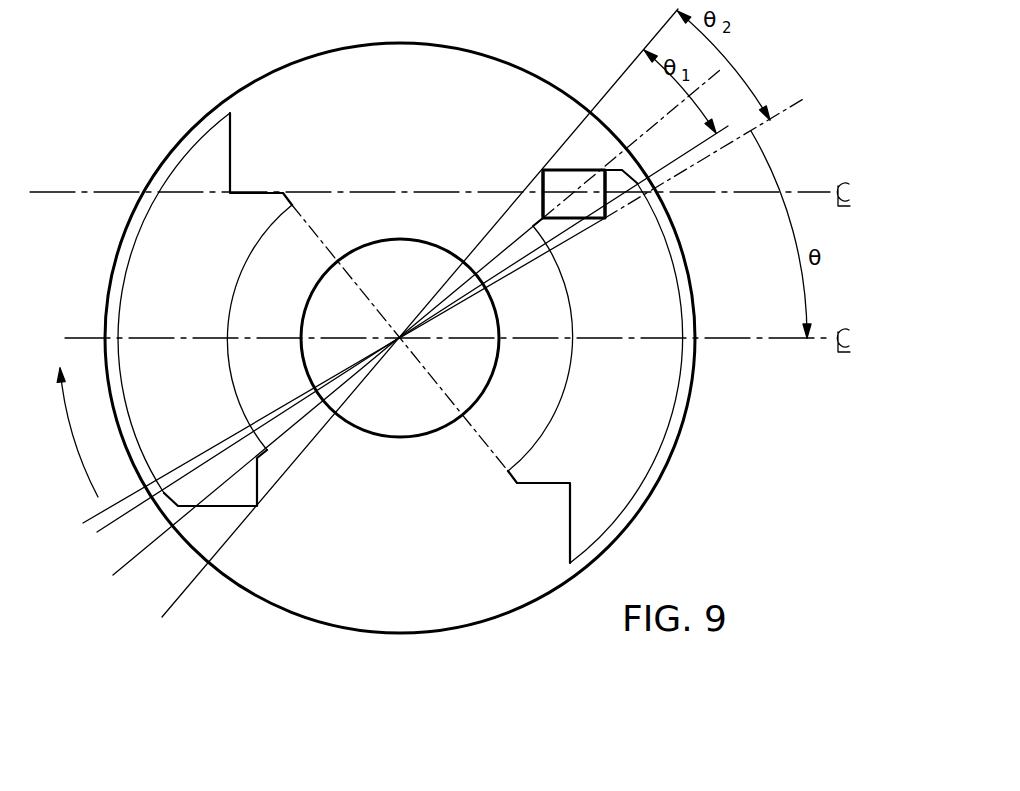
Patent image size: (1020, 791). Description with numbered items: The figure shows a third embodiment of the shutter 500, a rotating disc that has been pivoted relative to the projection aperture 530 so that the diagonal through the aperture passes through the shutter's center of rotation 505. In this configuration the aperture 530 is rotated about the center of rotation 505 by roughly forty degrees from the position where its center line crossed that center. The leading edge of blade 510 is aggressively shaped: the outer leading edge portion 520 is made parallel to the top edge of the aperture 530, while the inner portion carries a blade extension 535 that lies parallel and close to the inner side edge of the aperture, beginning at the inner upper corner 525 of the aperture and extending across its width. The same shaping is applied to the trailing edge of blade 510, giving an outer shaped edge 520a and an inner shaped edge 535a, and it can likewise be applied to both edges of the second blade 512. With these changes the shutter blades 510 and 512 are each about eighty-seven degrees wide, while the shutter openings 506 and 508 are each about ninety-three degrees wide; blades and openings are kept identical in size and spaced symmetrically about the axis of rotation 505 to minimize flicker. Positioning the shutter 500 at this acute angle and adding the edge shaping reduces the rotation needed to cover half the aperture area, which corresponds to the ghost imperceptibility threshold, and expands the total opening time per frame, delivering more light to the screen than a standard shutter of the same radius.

The shutter 500 is at (262, 648).
The center of rotation 505 is at (403, 328).
The shutter opening 506 is at (142, 295).
The shutter opening 508 is at (645, 430).
The blade 510 is at (514, 80).
The blade 512 is at (502, 588).
The outer leading edge portion 520 is at (611, 167).
The outer shaped edge 520a is at (230, 158).
The inner upper corner of aperture 525 is at (543, 169).
The aperture 530 is at (606, 203).
The blade extension 535 is at (543, 193).
The inner shaped edge 535a is at (255, 196).